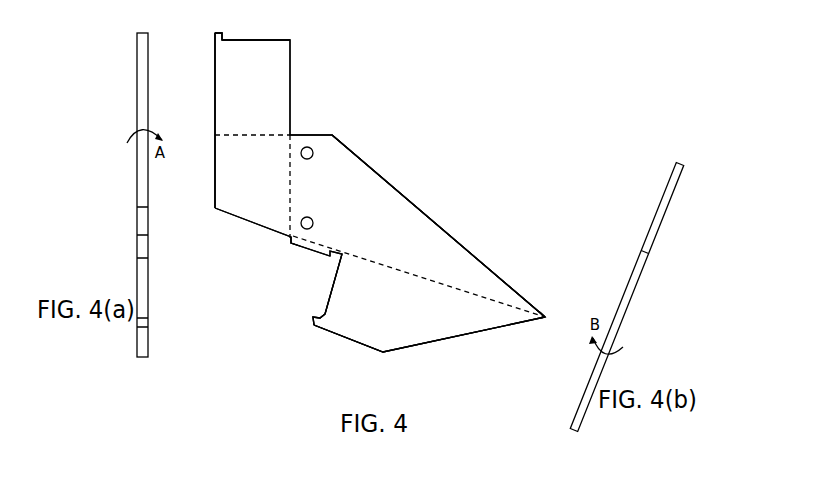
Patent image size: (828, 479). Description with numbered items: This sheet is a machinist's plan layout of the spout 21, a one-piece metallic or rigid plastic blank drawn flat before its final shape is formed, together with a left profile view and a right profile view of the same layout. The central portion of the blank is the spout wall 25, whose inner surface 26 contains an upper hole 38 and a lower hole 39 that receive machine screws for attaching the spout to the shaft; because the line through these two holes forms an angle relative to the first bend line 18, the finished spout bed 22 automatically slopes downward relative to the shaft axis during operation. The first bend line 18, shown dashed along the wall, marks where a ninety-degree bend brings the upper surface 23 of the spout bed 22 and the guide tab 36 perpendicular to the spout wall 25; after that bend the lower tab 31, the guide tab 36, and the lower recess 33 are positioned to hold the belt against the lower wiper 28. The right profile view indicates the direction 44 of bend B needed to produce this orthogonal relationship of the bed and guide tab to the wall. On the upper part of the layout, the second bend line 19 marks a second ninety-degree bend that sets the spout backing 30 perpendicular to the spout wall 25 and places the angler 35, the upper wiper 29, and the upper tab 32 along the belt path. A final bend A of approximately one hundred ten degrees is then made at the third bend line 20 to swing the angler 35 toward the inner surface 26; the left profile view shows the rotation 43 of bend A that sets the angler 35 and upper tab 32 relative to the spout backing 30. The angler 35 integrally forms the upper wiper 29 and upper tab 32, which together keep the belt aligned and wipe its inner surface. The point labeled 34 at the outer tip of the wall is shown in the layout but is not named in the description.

In FIG. 4, the first bend line 18 is at (445, 288).
In FIG. 4, the second bend line 19 is at (290, 208).
In FIG. 4, the third bend line 20 is at (257, 135).
In FIG. 4, the spout 21 is at (448, 125).
In FIG. 4, the spout bed 22 is at (447, 327).
In FIG. 4, the upper surface 23 is at (447, 327).
In FIG. 4, the spout wall 25 is at (393, 222).
In FIG. 4, the inner surface 26 is at (393, 222).
In FIG. 4, the lower wiper 28 is at (324, 303).
In FIG. 4, the upper wiper 29 is at (272, 38).
In FIG. 4, the spout backing 30 is at (226, 181).
In FIG. 4, the lower tab 31 is at (312, 322).
In FIG. 4, the upper tab 32 is at (219, 33).
In FIG. 4, the lower recess 33 is at (332, 270).
In FIG. 4, the tip 34 is at (546, 320).
In FIG. 4, the angler 35 is at (226, 93).
In FIG. 4, the guide tab 36 is at (298, 247).
In FIG. 4, the upper hole 38 is at (309, 146).
In FIG. 4, the lower hole 39 is at (311, 217).
In FIG. 4A, the rotation of bend A 43 is at (128, 122).
In FIG. 4B, the direction of bend B 44 is at (583, 313).